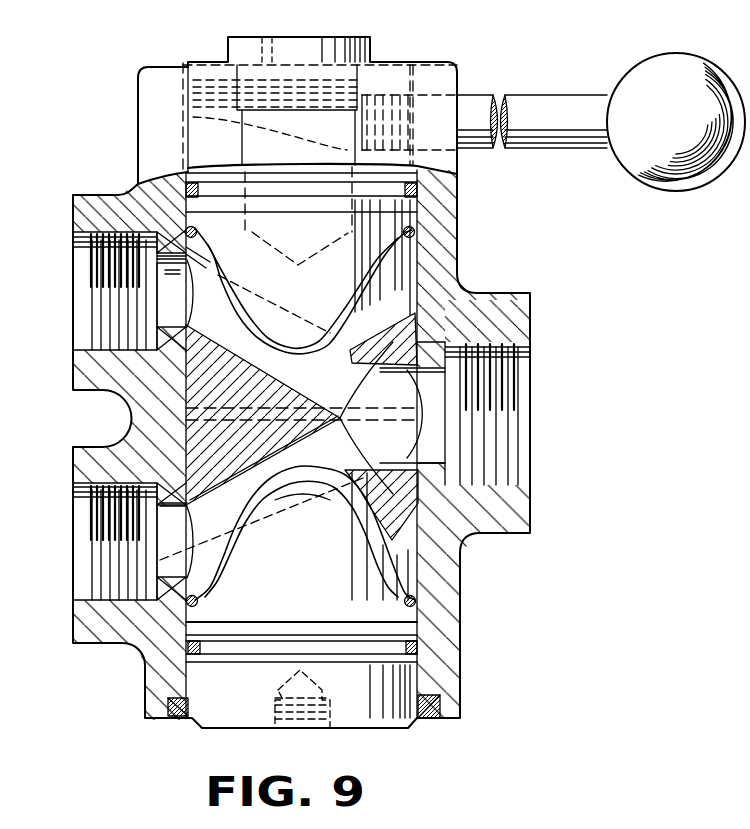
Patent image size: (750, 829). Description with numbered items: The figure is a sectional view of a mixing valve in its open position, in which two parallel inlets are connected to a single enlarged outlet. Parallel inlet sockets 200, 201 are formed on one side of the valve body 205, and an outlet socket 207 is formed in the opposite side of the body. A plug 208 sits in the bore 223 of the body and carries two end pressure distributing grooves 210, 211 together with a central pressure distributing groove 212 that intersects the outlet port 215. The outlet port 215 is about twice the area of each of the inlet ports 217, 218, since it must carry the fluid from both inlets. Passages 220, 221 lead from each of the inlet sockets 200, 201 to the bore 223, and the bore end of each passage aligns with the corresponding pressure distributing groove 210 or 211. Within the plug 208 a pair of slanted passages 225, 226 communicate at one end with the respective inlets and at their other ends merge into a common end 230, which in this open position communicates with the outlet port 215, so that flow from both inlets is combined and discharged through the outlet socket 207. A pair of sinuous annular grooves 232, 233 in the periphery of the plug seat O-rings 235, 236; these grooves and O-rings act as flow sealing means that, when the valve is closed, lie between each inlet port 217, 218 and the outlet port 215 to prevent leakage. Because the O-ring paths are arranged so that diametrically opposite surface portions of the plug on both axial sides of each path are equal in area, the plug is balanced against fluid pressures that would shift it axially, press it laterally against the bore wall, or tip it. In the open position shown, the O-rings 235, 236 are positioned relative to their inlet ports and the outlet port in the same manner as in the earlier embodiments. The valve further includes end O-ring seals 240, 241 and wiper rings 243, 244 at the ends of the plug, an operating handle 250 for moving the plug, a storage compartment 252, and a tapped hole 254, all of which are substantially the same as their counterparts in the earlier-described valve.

The inlet socket 200 is at (86, 272).
The inlet socket 201 is at (87, 517).
The valve body 205 is at (457, 256).
The outlet socket 207 is at (510, 386).
The plug 208 is at (417, 248).
The end pressure distributing groove 210 is at (450, 209).
The end pressure distributing groove 211 is at (417, 632).
The central pressure distributing groove 212 is at (186, 414).
The outlet port 215 is at (430, 443).
The inlet port 217 is at (168, 297).
The inlet port 218 is at (170, 497).
The passage 220 is at (142, 192).
The passage 221 is at (140, 650).
The bore 223 is at (404, 288).
The slanted passage 225 is at (280, 315).
The slanted passage 226 is at (290, 527).
The common end 230 is at (393, 383).
The sinuous annular groove 232 is at (205, 258).
The sinuous annular groove 233 is at (190, 548).
The O-ring 235 is at (196, 219).
The O-ring 236 is at (205, 603).
The end O-ring seal 240 is at (418, 192).
The end O-ring seal 241 is at (417, 648).
The wiper ring 243 is at (445, 172).
The wiper ring 244 is at (430, 718).
The operating handle 250 is at (573, 97).
The storage compartment 252 is at (193, 117).
The tapped hole 254 is at (335, 732).